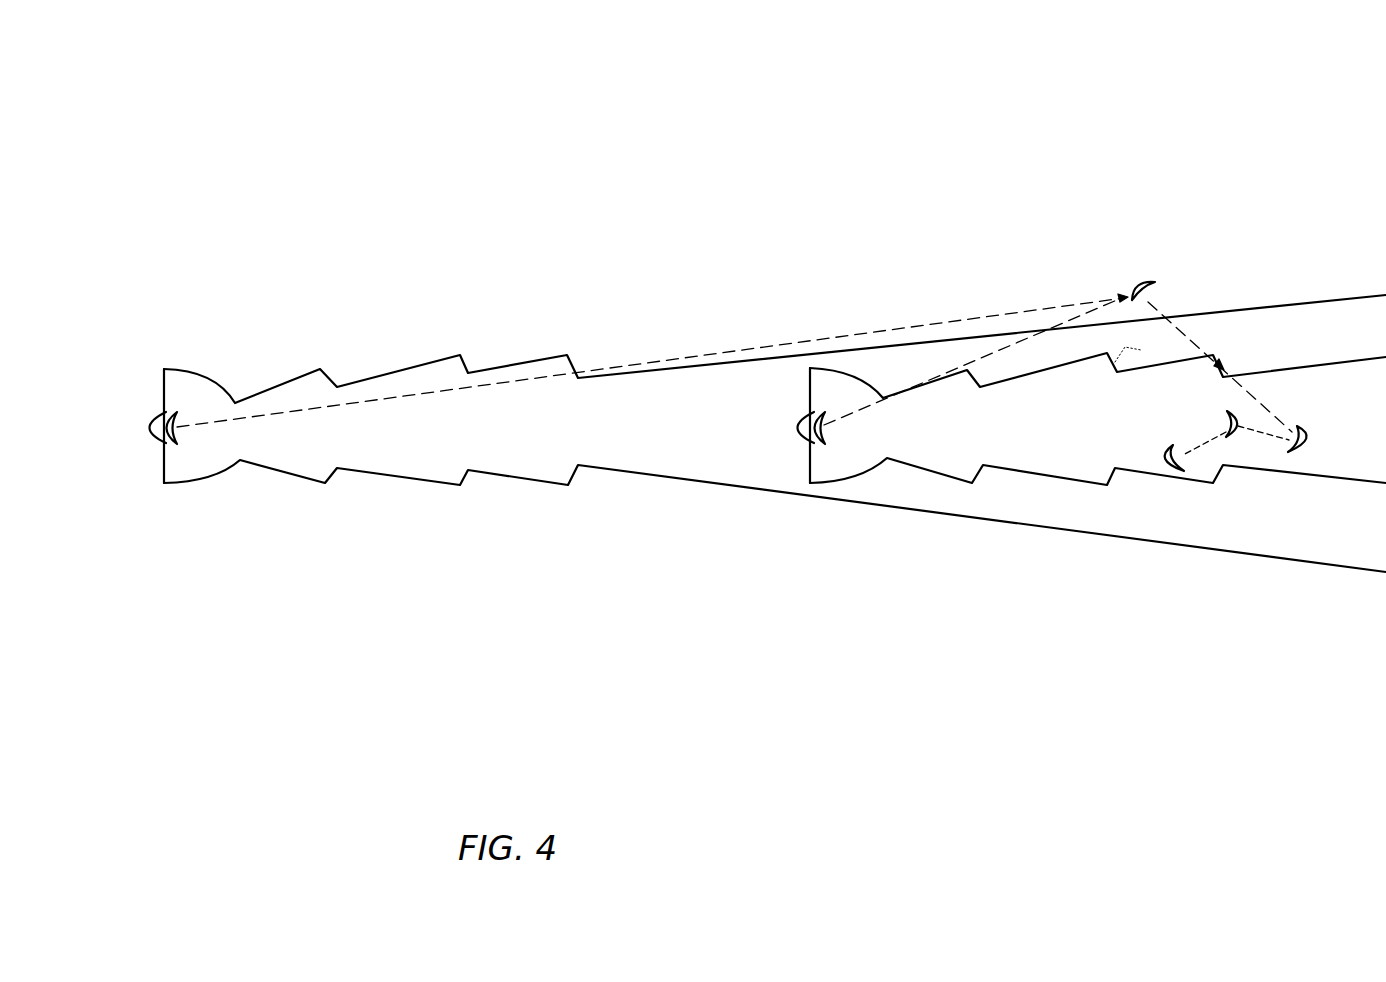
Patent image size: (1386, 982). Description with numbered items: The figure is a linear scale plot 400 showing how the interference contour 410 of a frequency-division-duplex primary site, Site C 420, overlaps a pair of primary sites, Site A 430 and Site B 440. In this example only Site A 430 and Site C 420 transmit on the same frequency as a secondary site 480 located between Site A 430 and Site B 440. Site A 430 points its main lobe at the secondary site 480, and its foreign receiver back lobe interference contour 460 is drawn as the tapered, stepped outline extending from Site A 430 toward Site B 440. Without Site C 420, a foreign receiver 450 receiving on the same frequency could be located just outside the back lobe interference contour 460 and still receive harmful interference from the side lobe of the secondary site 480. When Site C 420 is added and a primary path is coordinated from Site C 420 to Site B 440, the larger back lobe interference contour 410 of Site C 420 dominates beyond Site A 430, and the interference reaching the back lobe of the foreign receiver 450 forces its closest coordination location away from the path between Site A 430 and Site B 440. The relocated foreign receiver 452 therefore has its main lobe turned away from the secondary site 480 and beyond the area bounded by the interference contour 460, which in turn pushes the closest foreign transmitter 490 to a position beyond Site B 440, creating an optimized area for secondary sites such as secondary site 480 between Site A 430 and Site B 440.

The linear scale plot 400 is at (296, 82).
The interference contour 410 is at (422, 476).
The Site C 420 is at (172, 442).
The Site A 430 is at (797, 432).
The Site B 440 is at (1225, 440).
The foreign receiver 450 is at (1132, 346).
The new coordination location of the foreign receiver 452 is at (1140, 281).
The foreign receiver back lobe interference contour 460 is at (1033, 473).
The secondary site 480 is at (1170, 462).
The foreign transmitter 490 is at (1300, 428).